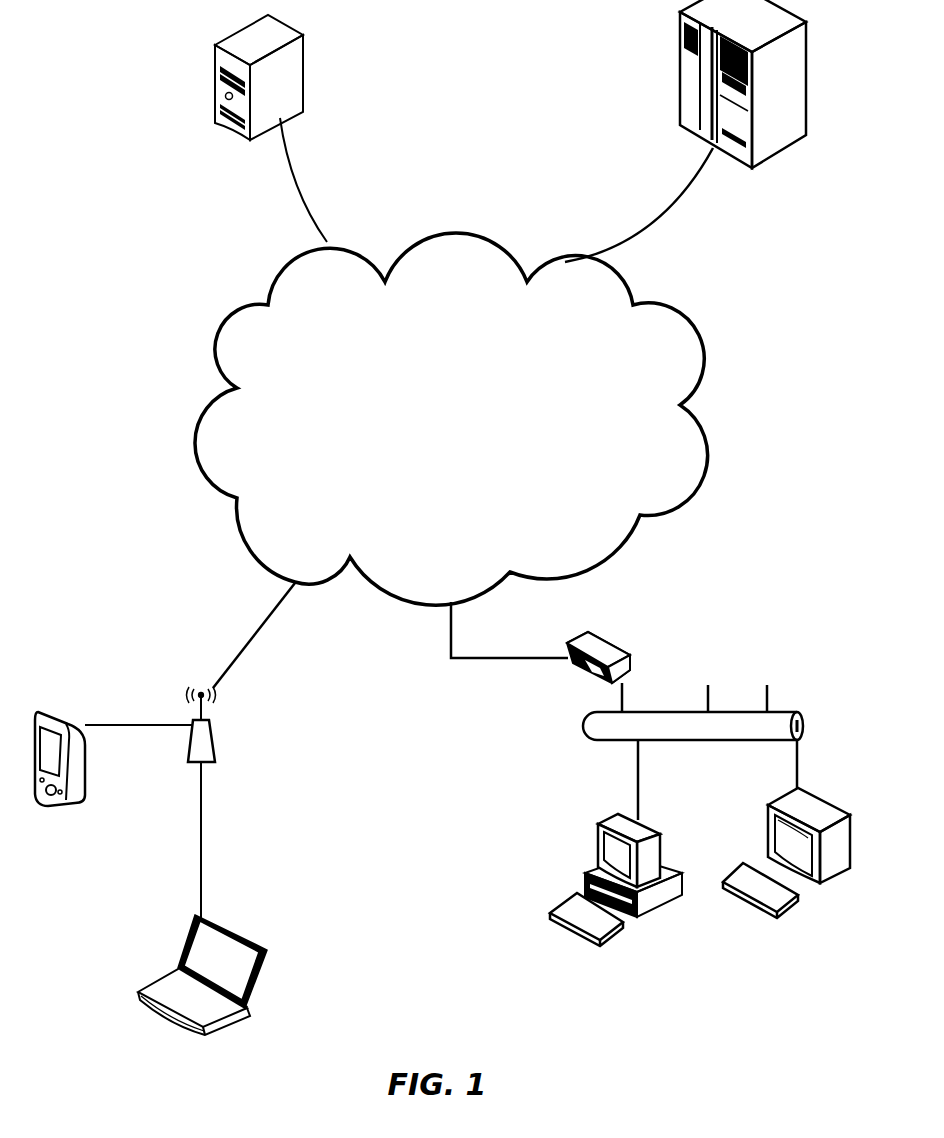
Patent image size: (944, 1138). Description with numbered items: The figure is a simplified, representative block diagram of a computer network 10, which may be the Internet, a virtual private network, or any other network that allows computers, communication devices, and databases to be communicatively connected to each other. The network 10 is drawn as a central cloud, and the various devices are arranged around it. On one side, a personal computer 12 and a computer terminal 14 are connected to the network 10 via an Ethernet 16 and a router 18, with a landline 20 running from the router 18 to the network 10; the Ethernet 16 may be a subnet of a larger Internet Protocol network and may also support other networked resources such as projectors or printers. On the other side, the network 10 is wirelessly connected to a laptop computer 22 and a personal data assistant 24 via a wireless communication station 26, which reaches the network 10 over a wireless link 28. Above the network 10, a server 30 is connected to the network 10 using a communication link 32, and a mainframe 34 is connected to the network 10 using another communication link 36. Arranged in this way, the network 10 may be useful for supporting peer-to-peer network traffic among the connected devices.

The network 10 is at (150, 306).
The personal computer 12 is at (593, 867).
The computer terminal 14 is at (833, 807).
The Ethernet 16 is at (797, 710).
The router 18 is at (630, 657).
The landline 20 is at (490, 660).
The laptop computer 22 is at (227, 1023).
The personal data assistant 24 is at (62, 724).
The wireless communication station 26 is at (215, 757).
The wireless link 28 is at (247, 645).
The server 30 is at (305, 77).
The communication link 32 is at (312, 221).
The mainframe 34 is at (760, 160).
The communication link 36 is at (683, 203).